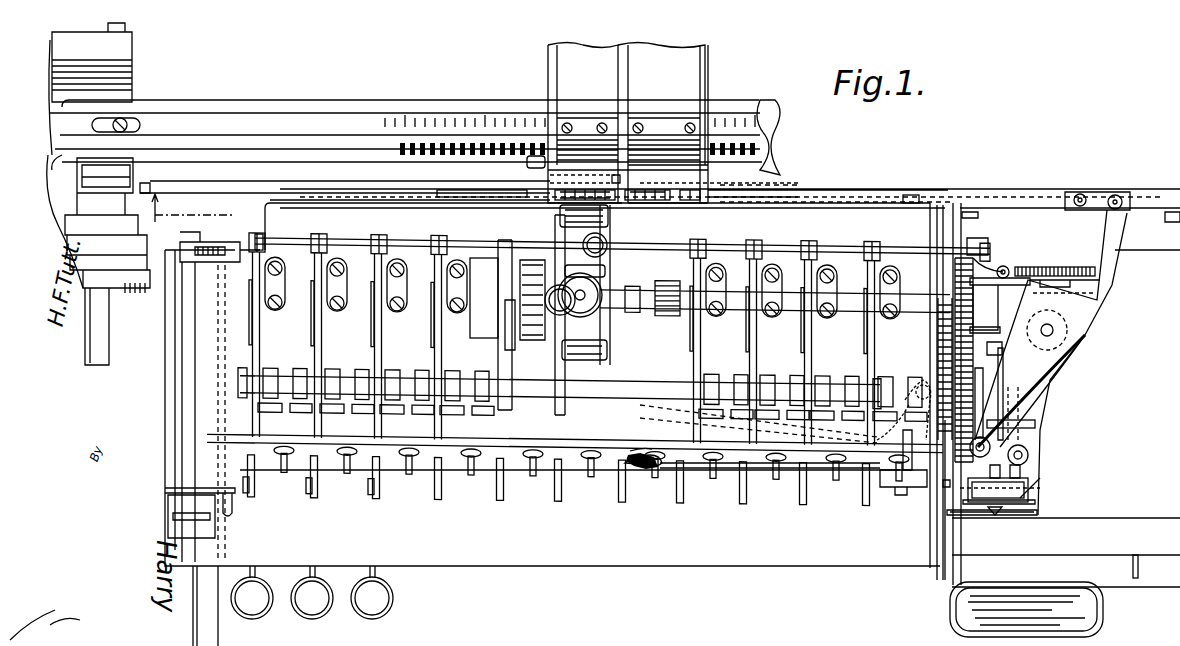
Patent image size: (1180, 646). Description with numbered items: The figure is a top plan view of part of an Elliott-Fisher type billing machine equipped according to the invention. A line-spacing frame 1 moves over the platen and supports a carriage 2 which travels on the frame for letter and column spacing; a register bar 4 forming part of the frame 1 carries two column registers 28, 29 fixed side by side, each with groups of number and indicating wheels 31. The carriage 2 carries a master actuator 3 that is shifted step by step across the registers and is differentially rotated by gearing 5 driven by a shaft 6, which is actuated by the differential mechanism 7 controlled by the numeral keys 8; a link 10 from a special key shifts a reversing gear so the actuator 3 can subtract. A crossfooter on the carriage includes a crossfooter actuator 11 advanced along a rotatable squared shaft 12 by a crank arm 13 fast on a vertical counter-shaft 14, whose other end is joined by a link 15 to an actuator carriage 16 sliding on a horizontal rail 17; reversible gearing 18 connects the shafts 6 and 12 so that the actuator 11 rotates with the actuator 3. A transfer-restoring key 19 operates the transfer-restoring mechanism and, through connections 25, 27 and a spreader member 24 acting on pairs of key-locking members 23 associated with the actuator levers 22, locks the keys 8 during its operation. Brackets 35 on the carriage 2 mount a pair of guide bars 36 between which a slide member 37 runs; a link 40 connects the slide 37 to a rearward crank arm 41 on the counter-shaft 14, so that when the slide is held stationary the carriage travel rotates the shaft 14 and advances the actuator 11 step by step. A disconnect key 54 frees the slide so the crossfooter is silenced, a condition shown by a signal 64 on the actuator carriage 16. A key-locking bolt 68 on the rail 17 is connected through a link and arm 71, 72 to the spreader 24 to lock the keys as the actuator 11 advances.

The line-spacing frame 1 is at (137, 52).
The carriage 2 is at (563, 424).
The master actuator 3 is at (550, 212).
The register bar 4 is at (750, 116).
The gearing 5 is at (600, 288).
The shaft 6 is at (705, 311).
The differential mechanism 7 is at (497, 340).
The numeral keys 8 is at (268, 615).
The link 10 is at (278, 240).
The crossfooter actuator 11 is at (1003, 363).
The squared shaft 12 is at (1035, 430).
The crank arm 13 is at (1030, 383).
The vertical counter-shaft 14 is at (1057, 328).
The link 15 is at (1033, 455).
The actuator carriage 16 is at (958, 357).
The horizontal rail 17 is at (1033, 501).
The reversible gearing 18 is at (935, 373).
The transfer-restoring key 19 is at (1103, 613).
The actuator levers 22 is at (330, 357).
The key-locking members 23 is at (352, 470).
The spreader member 24 is at (652, 417).
The operating connection 25 is at (925, 488).
The operating connection 27 is at (915, 400).
The column register 28 is at (585, 123).
The column register 29 is at (709, 123).
The indicating wheels 31 is at (612, 185).
The brackets 35 is at (221, 197).
The guide bars 36 is at (853, 193).
The slide member 37 is at (437, 193).
The link 40 is at (1038, 310).
The crank arm 41 is at (1093, 237).
The disconnect key 54 is at (1130, 565).
The signal 64 is at (992, 516).
The key-locking bolt 68 is at (1037, 480).
The link connection 71 is at (632, 470).
The arm connection 72 is at (712, 472).